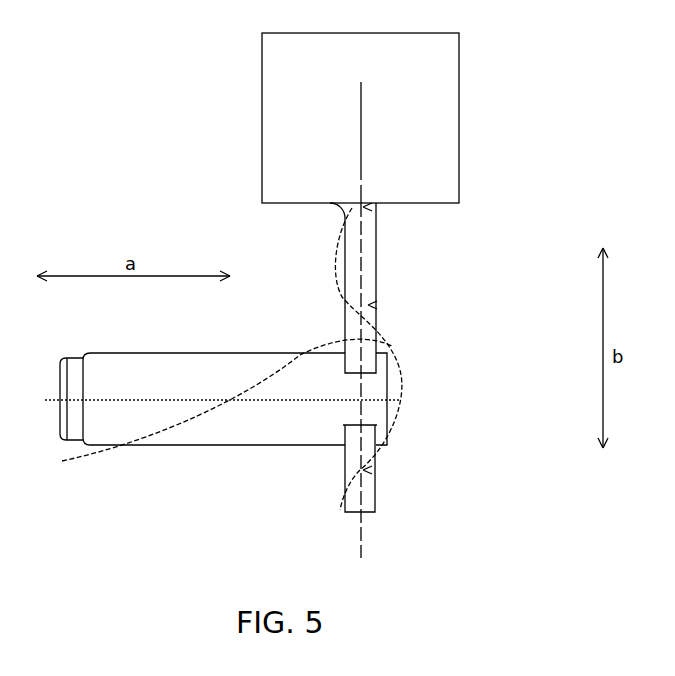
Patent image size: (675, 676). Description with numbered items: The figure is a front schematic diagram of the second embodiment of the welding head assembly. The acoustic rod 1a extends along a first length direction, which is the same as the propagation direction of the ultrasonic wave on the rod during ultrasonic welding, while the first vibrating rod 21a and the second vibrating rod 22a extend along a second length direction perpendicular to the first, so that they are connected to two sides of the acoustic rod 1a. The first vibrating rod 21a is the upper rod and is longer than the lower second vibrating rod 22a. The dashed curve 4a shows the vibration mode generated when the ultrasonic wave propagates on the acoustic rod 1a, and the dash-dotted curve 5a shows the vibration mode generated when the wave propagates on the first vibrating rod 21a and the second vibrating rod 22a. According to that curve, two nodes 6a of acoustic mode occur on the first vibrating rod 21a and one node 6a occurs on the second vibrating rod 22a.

The acoustic rod 1a is at (168, 362).
The dashed curve 4a is at (206, 422).
The dash-dotted curve 5a is at (404, 378).
The node of acoustic mode 6a is at (363, 207).
The first vibrating rod 21a is at (376, 253).
The second vibrating rod 22a is at (368, 497).